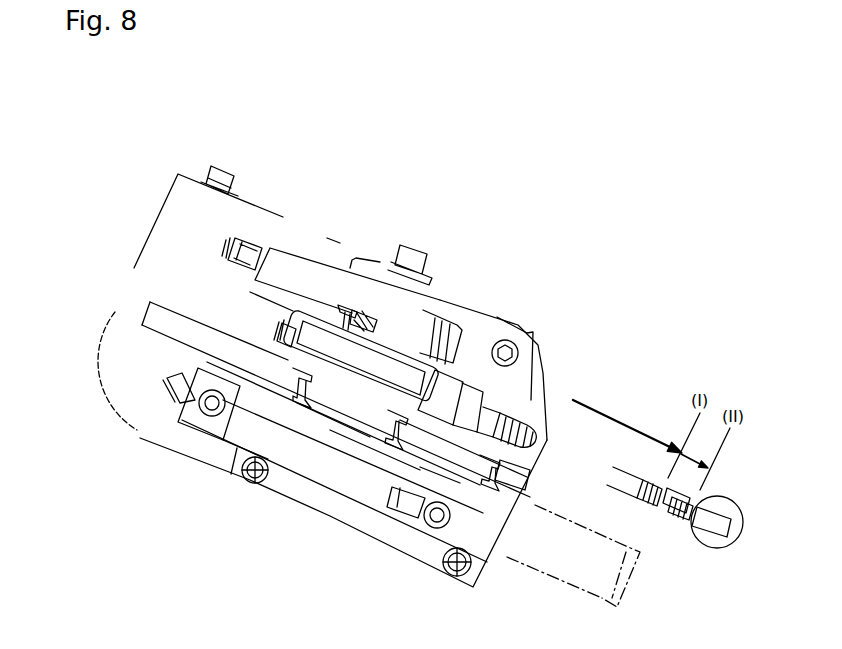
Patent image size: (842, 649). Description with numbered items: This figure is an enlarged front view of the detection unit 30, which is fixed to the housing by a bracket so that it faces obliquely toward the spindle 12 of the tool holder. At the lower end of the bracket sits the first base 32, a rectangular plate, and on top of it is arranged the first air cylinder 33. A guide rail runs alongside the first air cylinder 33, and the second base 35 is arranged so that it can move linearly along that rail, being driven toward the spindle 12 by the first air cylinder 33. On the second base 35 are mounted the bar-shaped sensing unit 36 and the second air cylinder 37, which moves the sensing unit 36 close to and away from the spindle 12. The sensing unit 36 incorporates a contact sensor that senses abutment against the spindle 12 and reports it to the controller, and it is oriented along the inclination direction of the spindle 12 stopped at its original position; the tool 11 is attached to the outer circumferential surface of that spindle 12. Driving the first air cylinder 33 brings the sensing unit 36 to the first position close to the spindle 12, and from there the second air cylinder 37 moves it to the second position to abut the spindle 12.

The detection unit 30 is at (505, 252).
The second air cylinder 37 is at (315, 283).
The second base 35 is at (178, 323).
The first base 32 is at (137, 398).
The first air cylinder 33 is at (313, 462).
The sensing unit 36 is at (512, 420).
The tool 11 is at (731, 510).
The spindle 12 is at (716, 549).